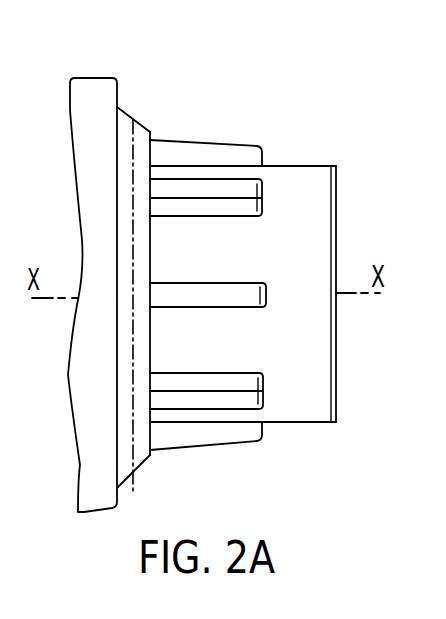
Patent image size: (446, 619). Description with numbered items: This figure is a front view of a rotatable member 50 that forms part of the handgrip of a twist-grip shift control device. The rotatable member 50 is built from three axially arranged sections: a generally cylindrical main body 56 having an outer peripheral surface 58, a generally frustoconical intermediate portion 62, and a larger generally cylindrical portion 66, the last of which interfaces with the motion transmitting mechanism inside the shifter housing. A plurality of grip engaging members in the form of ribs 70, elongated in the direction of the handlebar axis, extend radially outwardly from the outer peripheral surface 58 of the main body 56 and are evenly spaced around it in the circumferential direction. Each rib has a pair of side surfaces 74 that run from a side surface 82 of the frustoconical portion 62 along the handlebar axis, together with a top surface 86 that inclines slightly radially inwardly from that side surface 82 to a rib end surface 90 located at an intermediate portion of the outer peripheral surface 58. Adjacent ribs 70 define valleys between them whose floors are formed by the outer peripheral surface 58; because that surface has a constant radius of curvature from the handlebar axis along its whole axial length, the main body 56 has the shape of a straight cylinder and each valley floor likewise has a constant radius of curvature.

The rotatable member 50 is at (153, 66).
The main body 56 is at (310, 174).
The outer peripheral surface 58 is at (287, 263).
The frustoconical intermediate portion 62 is at (136, 474).
The larger generally cylindrical portion 66 is at (91, 87).
The ribs 70 is at (193, 183).
The side surfaces 74 is at (238, 148).
The side surface 82 is at (152, 331).
The top surface 86 is at (163, 138).
The rib end surface 90 is at (263, 154).